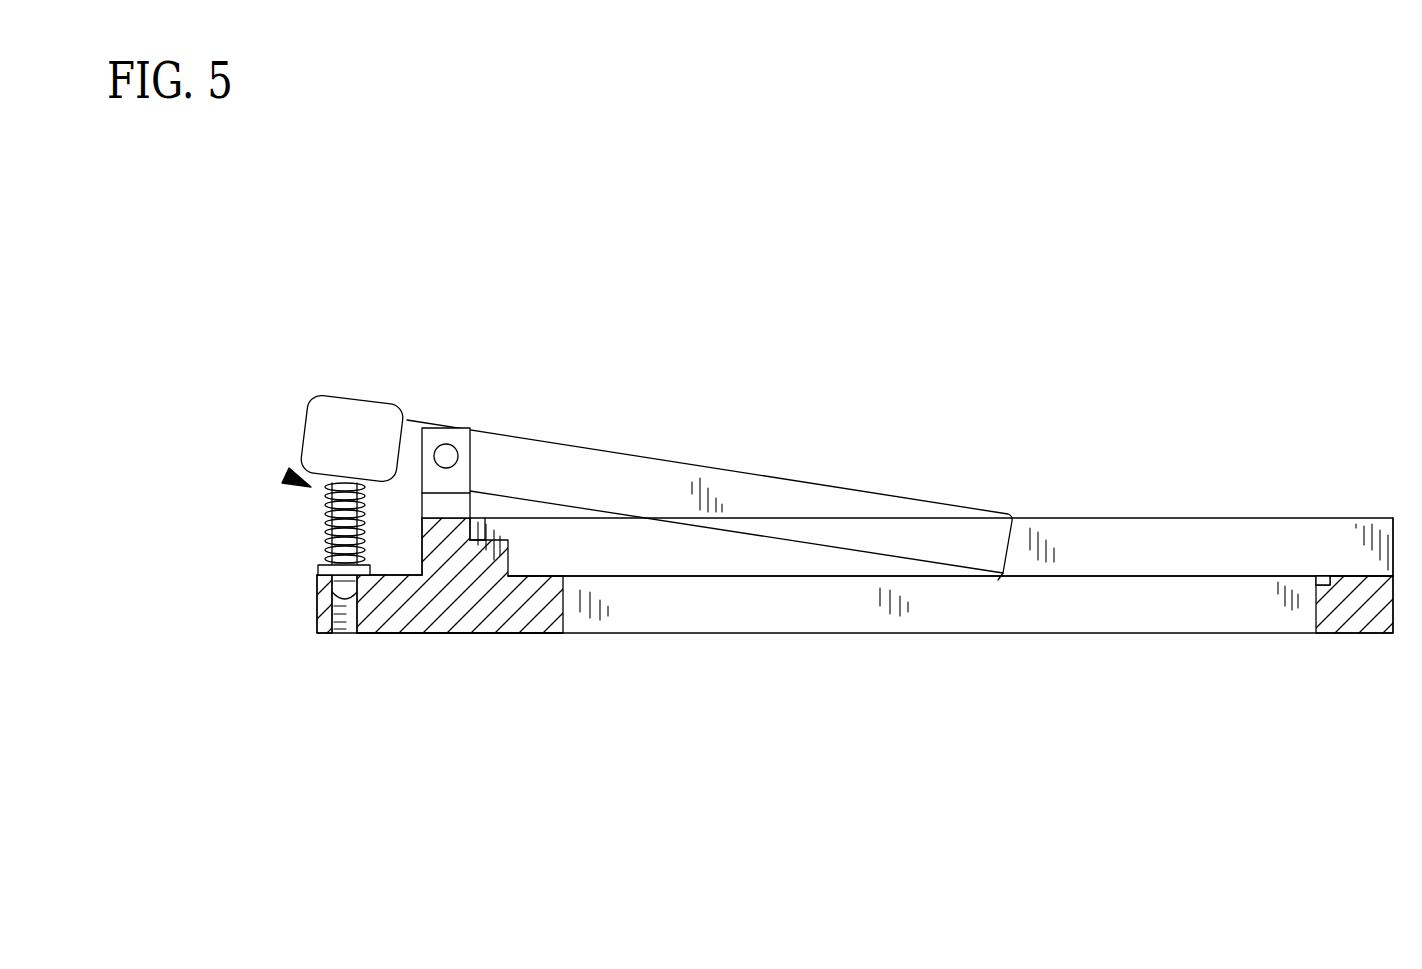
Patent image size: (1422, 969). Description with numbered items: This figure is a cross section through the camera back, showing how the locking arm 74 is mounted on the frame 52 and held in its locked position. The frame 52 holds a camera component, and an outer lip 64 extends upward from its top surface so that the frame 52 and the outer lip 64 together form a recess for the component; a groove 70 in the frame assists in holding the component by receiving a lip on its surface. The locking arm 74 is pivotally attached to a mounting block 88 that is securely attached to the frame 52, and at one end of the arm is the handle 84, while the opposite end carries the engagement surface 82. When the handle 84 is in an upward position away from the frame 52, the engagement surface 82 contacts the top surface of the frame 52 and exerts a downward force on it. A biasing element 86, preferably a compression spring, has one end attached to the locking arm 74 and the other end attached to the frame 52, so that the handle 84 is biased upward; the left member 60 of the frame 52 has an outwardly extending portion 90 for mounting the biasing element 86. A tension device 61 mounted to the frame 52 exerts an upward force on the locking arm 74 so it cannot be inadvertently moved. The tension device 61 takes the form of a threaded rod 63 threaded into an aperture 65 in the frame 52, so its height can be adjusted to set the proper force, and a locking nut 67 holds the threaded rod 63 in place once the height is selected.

The frame 52 is at (813, 613).
The left member 60 is at (512, 633).
The tension device 61 is at (290, 478).
The threaded rod 63 is at (328, 520).
The outer lip 64 is at (1127, 538).
The aperture 65 is at (342, 633).
The locking nut 67 is at (318, 568).
The groove 70 is at (1325, 583).
The locking arm 74 is at (582, 443).
The engagement surface 82 is at (998, 578).
The handle 84 is at (355, 400).
The biasing element 86 is at (326, 542).
The mounting block 88 is at (433, 427).
The outwardly extending portion 90 is at (408, 633).